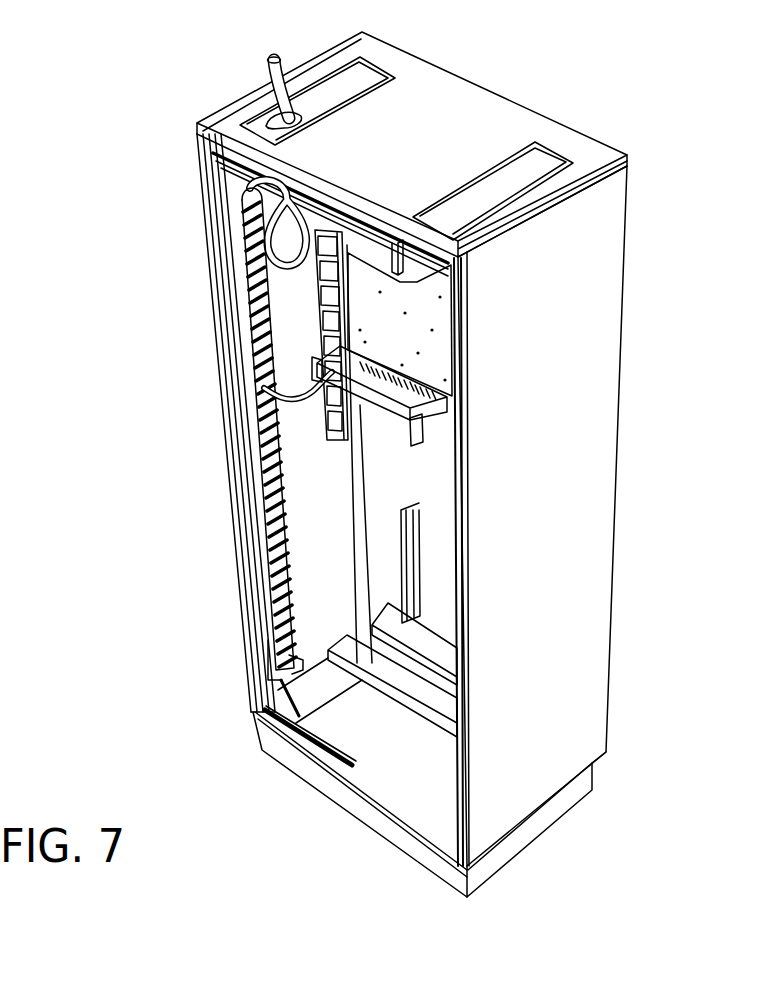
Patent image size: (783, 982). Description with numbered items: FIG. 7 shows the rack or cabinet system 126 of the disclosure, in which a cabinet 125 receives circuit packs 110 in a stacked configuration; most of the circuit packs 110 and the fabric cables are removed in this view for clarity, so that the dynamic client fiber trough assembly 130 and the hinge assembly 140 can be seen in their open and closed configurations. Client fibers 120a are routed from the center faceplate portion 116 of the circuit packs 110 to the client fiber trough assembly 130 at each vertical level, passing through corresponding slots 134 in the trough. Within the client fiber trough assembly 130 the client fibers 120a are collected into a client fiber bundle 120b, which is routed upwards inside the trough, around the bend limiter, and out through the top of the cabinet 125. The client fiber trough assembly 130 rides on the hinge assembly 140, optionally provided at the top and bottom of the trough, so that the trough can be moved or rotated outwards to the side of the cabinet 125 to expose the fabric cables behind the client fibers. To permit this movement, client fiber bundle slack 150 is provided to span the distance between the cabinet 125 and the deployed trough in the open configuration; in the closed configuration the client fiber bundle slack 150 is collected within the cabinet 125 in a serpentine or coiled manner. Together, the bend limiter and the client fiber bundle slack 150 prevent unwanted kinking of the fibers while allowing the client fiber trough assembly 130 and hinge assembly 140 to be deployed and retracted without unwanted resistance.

The circuit pack 110 is at (366, 317).
The center faceplate portion 116 is at (400, 414).
The client fibers 120a is at (291, 403).
The client fiber bundle 120b is at (238, 215).
The cabinet 125 is at (641, 297).
The rack or cabinet system 126 is at (556, 96).
The client fiber trough assembly 130 is at (211, 447).
The slots 134 is at (255, 378).
The hinge assembly 140 is at (241, 167).
The client fiber bundle slack 150 is at (247, 181).